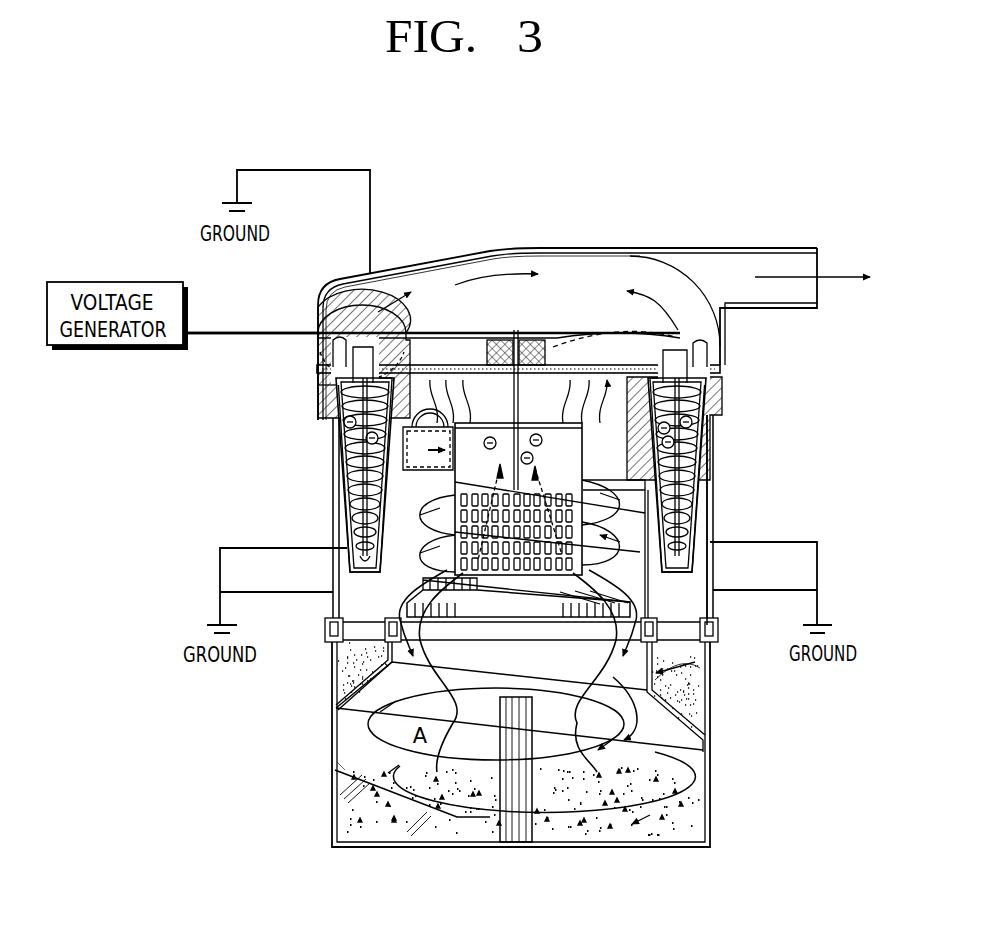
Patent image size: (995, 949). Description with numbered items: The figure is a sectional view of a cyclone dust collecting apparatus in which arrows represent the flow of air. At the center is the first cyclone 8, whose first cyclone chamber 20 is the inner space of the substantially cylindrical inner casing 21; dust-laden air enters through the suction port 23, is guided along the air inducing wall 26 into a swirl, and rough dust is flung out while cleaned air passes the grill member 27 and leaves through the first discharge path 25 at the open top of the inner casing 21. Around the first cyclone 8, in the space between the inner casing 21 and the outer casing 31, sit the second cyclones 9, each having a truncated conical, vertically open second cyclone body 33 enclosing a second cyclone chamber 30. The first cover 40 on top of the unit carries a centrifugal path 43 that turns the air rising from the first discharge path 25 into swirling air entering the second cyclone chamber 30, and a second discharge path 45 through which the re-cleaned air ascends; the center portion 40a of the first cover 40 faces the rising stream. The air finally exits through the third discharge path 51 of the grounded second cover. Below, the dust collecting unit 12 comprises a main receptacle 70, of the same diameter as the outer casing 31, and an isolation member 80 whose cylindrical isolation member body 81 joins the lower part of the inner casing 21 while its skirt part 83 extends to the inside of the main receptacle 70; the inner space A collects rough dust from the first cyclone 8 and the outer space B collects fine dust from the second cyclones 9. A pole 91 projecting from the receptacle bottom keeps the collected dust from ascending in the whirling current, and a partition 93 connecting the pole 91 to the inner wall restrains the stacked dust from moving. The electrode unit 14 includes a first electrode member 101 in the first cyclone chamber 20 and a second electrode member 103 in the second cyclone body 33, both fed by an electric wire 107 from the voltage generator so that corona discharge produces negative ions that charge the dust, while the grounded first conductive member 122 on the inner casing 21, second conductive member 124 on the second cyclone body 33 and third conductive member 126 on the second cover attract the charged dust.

The first cyclone 8 is at (620, 472).
The second cyclones 9 is at (704, 512).
The dust collecting unit 12 is at (724, 731).
The electrode unit 14 is at (222, 487).
The first cyclone chamber 20 is at (406, 562).
The inner casing 21 is at (650, 602).
The suction port 23 is at (455, 482).
The first discharge path 25 is at (585, 424).
The air inducing wall 26 is at (427, 412).
The grill member 27 is at (363, 543).
The second cyclone chamber 30 is at (700, 396).
The outer casing 31 is at (714, 577).
The second cyclone body 33 is at (700, 493).
The first cover 40 is at (603, 330).
The center portion of the first cover 40a is at (533, 338).
The centrifugal path 43 is at (680, 336).
The second discharge path 45 is at (317, 358).
The third discharge path 51 is at (818, 256).
The main receptacle 70 is at (710, 812).
The isolation member 80 is at (673, 667).
The isolation member body 81 is at (652, 642).
The skirt part 83 is at (687, 706).
The pole 91 is at (498, 825).
The partition 93 is at (362, 828).
The first electrode member 101 is at (507, 456).
The second electrode member 103 is at (317, 390).
The electric wire 107 is at (270, 326).
The first conductive member 122 is at (688, 572).
The second conductive member 124 is at (700, 440).
The third conductive member 126 is at (463, 250).